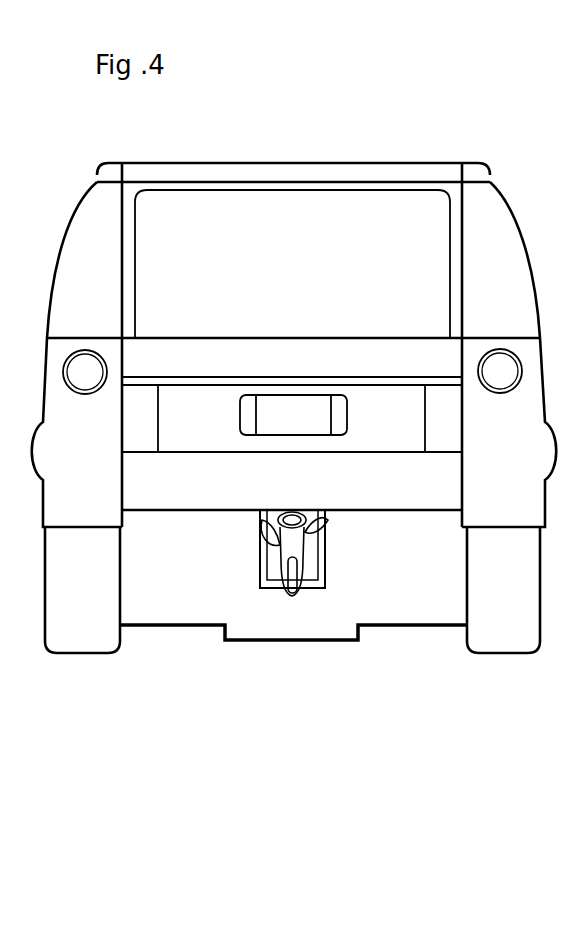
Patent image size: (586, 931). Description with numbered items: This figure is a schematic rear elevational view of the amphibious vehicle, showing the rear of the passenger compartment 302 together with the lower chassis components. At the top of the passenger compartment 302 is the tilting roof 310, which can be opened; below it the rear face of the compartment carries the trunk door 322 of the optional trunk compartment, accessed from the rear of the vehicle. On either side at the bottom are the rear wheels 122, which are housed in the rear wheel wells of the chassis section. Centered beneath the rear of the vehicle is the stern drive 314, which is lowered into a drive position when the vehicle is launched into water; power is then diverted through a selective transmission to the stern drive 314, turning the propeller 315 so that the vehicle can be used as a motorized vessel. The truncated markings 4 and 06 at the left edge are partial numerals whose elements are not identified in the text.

The partial numeral (cut off) 4 is at (8, 142).
The partial numeral (cut off) 06 is at (25, 298).
The tilting roof 310 is at (447, 182).
The passenger compartment section 302 is at (230, 280).
The trunk door 322 is at (390, 487).
The rear wheels 122 is at (80, 632).
The propeller 315 is at (260, 550).
The stern drive 314 is at (280, 565).